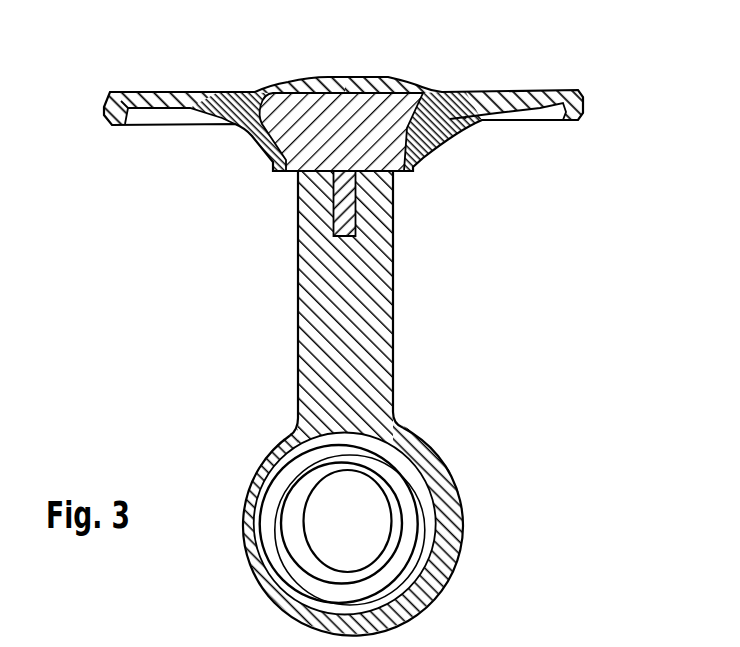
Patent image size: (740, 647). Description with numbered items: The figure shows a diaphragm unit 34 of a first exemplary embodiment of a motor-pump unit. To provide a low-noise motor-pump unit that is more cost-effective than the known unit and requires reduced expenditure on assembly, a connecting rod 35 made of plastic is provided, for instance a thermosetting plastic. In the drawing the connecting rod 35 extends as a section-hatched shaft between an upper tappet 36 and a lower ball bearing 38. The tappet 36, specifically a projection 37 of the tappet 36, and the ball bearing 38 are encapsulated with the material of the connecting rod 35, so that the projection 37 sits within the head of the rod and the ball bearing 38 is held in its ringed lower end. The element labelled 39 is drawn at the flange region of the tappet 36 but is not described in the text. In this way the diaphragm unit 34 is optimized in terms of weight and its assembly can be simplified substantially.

The diaphragm unit 34 is at (538, 287).
The connecting rod 35 is at (312, 319).
The tappet 36 is at (292, 118).
The projection 37 is at (347, 220).
The ball bearing 38 is at (410, 457).
The flange disk 39 is at (447, 105).